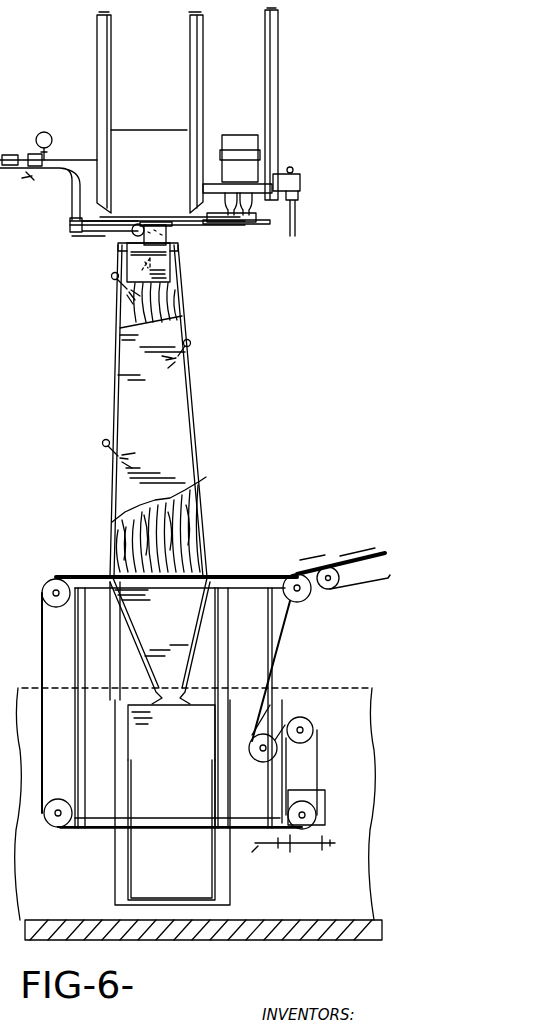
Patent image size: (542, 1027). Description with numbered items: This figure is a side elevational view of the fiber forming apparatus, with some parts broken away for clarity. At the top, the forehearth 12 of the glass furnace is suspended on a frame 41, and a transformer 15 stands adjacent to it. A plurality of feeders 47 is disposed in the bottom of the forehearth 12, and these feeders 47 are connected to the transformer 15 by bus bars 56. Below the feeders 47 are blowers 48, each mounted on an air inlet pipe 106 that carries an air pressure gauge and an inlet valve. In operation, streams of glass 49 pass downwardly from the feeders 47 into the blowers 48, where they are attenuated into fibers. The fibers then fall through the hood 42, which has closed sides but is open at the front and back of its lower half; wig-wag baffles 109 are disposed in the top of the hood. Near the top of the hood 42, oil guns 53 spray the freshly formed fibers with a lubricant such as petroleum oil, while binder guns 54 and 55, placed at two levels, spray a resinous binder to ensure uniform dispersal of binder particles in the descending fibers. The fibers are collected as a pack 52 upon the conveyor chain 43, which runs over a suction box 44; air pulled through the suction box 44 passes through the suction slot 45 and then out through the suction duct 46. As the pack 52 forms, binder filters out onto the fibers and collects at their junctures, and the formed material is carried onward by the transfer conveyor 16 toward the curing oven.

The frame 41 is at (97, 53).
The forehearth 12 is at (122, 138).
The transformer 15 is at (238, 136).
The air inlet pipe 106 is at (88, 233).
The streams of glass 49 is at (137, 224).
The feeders 47 is at (148, 226).
The blowers 48 is at (168, 233).
The bus bars 56 is at (200, 222).
The wig-wag baffles 109 is at (128, 265).
The hood 42 is at (190, 460).
The guns 53 is at (124, 287).
The guns 54 is at (190, 351).
The guns 55 is at (118, 456).
The pack 52 is at (284, 568).
The transfer conveyor 16 is at (345, 598).
The conveyor chain 43 is at (42, 632).
The suction box 44 is at (190, 620).
The suction slot 45 is at (170, 707).
The suction duct 46 is at (205, 878).